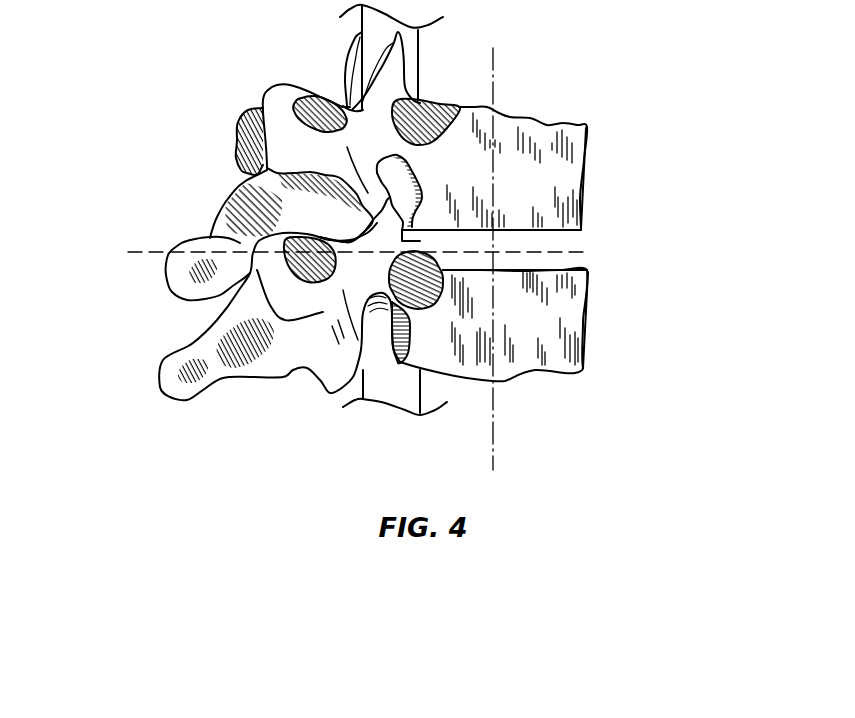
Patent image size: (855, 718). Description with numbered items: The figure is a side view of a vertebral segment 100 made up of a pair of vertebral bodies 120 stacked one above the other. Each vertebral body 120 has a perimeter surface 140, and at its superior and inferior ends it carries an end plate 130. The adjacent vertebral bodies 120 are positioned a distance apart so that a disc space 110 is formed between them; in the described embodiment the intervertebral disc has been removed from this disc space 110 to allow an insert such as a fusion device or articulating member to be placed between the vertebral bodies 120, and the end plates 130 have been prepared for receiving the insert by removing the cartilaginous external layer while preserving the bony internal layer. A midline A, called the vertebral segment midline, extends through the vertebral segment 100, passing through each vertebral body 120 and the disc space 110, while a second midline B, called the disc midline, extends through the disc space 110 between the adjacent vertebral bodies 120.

The vertebral segment 100 is at (165, 178).
The disc space 110 is at (573, 243).
The vertebral body 120 is at (567, 120).
The end plate 130 is at (581, 228).
The perimeter surface 140 is at (520, 242).
The midline A is at (494, 60).
The second midline B is at (603, 252).